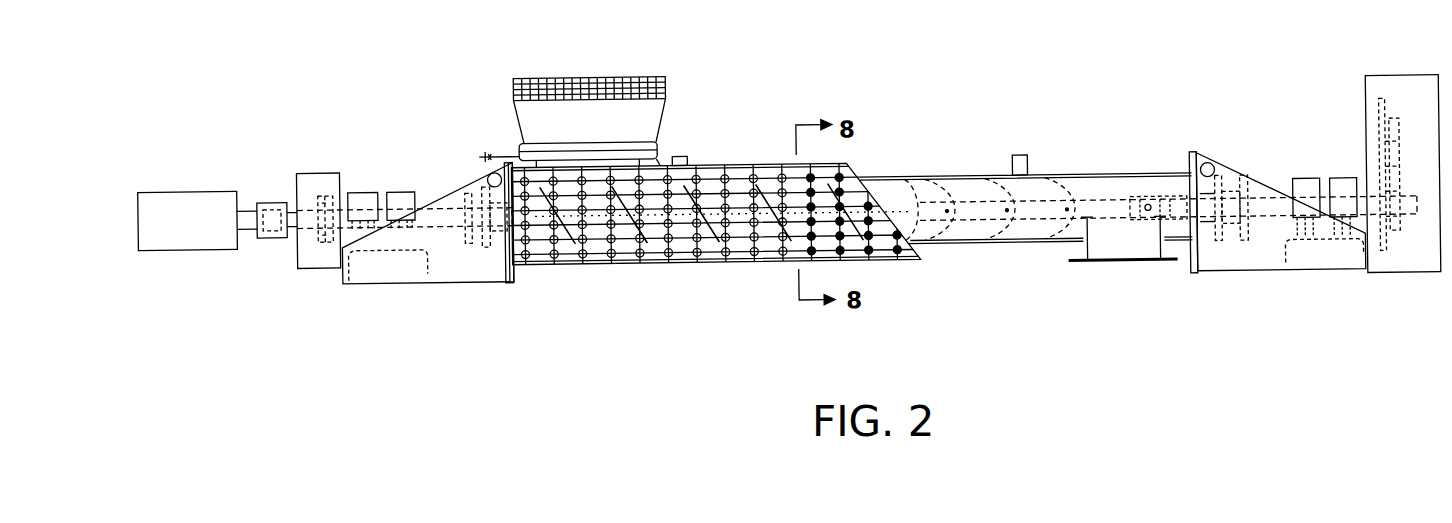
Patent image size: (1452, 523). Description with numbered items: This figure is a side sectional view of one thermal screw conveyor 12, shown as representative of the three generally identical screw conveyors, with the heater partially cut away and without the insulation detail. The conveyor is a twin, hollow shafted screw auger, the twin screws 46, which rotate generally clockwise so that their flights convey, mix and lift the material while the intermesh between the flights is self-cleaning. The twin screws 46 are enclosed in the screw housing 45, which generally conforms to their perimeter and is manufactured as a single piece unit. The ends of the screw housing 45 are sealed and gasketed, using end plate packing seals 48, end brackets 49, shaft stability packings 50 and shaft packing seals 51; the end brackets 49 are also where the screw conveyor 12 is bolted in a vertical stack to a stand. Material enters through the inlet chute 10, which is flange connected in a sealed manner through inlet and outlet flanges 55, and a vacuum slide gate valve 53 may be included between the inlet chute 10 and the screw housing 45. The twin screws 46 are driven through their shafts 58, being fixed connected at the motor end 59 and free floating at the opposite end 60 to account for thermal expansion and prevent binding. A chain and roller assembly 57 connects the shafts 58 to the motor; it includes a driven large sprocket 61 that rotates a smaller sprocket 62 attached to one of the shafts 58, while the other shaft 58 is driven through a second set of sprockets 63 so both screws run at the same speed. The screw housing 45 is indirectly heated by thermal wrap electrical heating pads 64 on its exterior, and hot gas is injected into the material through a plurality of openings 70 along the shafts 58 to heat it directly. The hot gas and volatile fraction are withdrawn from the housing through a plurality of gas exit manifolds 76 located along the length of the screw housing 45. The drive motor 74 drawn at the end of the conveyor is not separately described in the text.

The inlet chute 10 is at (515, 110).
The screw conveyor 12 is at (918, 98).
The screw housing 45 is at (920, 178).
The twin screws 46 is at (962, 178).
The end plate packing seals 48 is at (503, 262).
The end brackets 49 is at (440, 279).
The shaft stability packings 50 is at (397, 188).
The shaft packing seals 51 is at (320, 236).
The vacuum slide gate valve 53 is at (485, 152).
The inlet and outlet flanges 55 is at (663, 157).
The chain and roller assembly 57 is at (1367, 97).
The screw shafts 58 is at (296, 205).
The motor end 59 is at (1182, 180).
The free floating end 60 is at (512, 283).
The large sprocket 61 is at (1385, 115).
The smaller sprocket 62 is at (1388, 262).
The second set of sprockets 63 is at (1225, 188).
The thermal wrap electrical heating pads 64 is at (717, 262).
The openings 70 is at (997, 245).
The motor 74 is at (188, 185).
The gas exit manifolds 76 is at (688, 157).